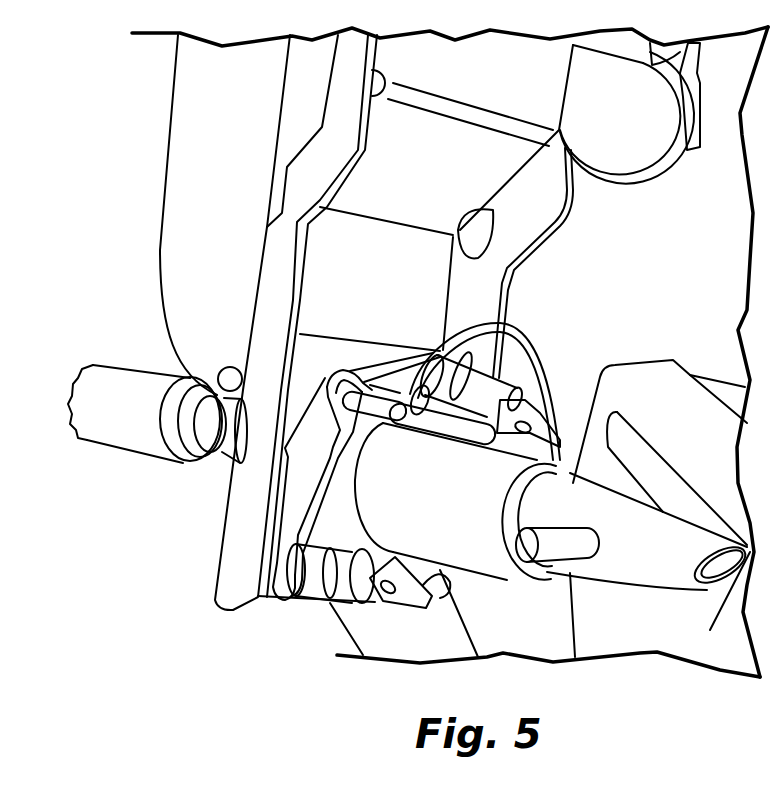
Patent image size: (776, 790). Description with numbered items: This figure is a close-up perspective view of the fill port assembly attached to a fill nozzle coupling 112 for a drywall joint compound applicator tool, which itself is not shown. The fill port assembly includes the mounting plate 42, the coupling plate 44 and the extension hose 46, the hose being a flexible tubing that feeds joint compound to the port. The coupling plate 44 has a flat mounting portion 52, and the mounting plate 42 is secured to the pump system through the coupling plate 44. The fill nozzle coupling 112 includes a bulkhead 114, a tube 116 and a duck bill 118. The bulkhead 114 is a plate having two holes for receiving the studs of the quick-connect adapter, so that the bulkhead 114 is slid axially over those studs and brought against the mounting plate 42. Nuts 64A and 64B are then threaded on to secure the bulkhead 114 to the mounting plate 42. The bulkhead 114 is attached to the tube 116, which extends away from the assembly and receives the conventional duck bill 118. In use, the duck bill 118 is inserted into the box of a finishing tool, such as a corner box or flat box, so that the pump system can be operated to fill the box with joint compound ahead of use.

The mounting plate 42 is at (321, 358).
The coupling plate 44 is at (303, 157).
The extension hose 46 is at (117, 387).
The flat mounting portion 52 is at (421, 288).
The nut 64A is at (350, 590).
The nut 64B is at (493, 393).
The fill nozzle coupling 112 is at (602, 612).
The bulkhead 114 is at (332, 518).
The tube 116 is at (480, 557).
The duck bill 118 is at (660, 530).